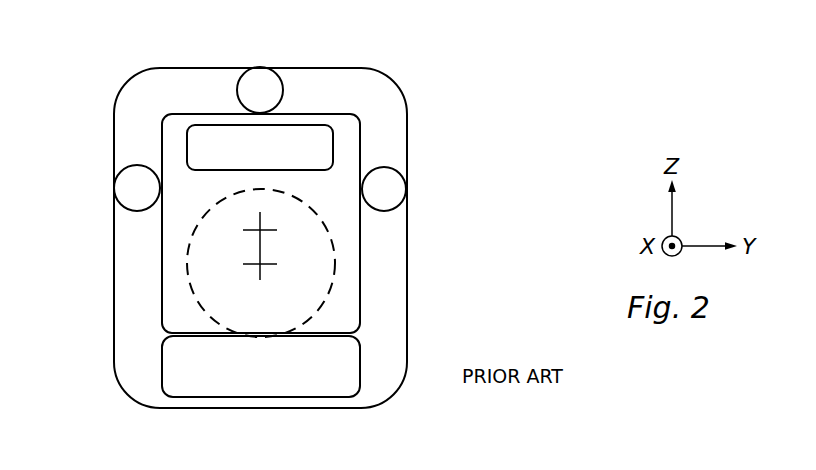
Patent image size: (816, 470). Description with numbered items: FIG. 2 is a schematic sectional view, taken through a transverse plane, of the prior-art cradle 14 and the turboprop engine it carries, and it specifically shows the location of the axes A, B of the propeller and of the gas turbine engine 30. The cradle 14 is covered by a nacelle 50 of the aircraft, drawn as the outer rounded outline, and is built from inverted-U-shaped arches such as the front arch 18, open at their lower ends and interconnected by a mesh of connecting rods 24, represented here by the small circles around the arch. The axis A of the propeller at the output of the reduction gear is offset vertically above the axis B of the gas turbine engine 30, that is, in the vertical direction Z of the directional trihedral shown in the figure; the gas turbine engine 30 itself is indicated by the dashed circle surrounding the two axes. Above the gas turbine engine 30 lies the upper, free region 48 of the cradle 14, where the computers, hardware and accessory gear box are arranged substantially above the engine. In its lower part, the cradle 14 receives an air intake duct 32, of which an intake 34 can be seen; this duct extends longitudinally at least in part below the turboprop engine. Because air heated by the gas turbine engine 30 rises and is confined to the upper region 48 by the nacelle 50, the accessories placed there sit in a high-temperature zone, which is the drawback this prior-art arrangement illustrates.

The cradle 14 is at (140, 130).
The nacelle 50 is at (178, 66).
The front arch 18 is at (373, 102).
The connecting rods 24 is at (268, 92).
The upper free region 48 is at (293, 145).
The gas turbine engine 30 is at (187, 248).
The intake 34 is at (190, 364).
The axis of the propeller A is at (278, 234).
The axis of the gas turbine engine B is at (276, 270).
The air intake duct 32 is at (234, 466).